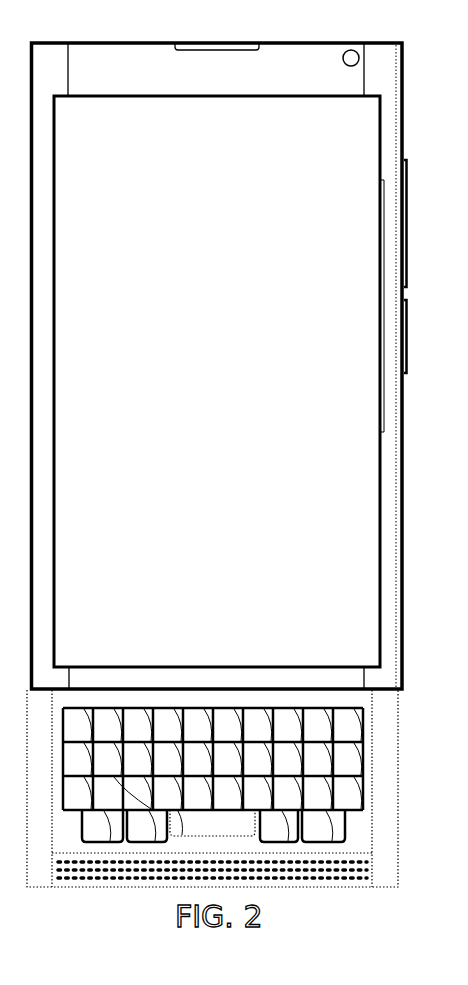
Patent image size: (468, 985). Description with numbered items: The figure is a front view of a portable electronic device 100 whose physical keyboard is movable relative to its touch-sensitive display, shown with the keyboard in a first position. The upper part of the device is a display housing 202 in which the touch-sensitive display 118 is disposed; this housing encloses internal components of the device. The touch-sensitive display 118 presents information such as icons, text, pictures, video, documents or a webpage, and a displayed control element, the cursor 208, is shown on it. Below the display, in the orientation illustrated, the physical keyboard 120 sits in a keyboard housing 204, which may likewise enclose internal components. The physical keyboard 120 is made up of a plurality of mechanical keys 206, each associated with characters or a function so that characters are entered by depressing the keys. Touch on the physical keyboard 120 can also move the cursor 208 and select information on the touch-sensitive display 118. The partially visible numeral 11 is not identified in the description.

The electronic device 100 is at (247, 462).
The display housing 202 is at (401, 146).
The keyboard housing 204 is at (397, 849).
The mechanical keys 206 is at (262, 762).
The cursor 208 is at (143, 182).
The touch-sensitive display 118 is at (378, 254).
The physical keyboard 120 is at (363, 797).
The partially visible reference (cropped) 11 is at (435, 600).